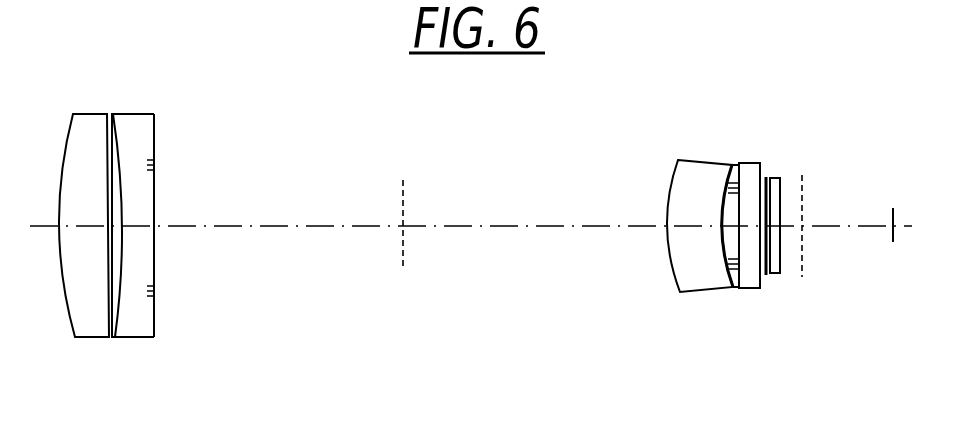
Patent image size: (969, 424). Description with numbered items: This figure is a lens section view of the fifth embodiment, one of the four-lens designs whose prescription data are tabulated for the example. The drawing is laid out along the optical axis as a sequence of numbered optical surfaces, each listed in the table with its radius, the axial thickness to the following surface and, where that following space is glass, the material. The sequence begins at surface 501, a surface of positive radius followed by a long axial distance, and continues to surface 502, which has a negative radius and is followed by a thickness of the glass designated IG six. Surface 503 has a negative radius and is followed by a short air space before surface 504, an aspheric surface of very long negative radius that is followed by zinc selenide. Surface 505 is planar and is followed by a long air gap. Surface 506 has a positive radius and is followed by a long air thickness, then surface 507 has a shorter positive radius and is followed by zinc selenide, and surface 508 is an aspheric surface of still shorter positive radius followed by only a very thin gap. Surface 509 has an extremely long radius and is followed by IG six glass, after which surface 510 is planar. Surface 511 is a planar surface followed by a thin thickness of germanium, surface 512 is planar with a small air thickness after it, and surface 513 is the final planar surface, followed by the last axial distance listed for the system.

The lens surface 501 is at (70, 127).
The lens surface 502 is at (108, 320).
The lens surface 503 is at (122, 120).
The aspheric lens surface 504 is at (155, 323).
The planar surface 505 is at (403, 258).
The lens surface 506 is at (671, 180).
The lens surface 507 is at (732, 279).
The aspheric lens surface 508 is at (741, 172).
The lens surface 509 is at (745, 276).
The planar surface 510 is at (767, 178).
The planar surface 511 is at (781, 268).
The planar surface 512 is at (803, 183).
The planar surface 513 is at (891, 236).